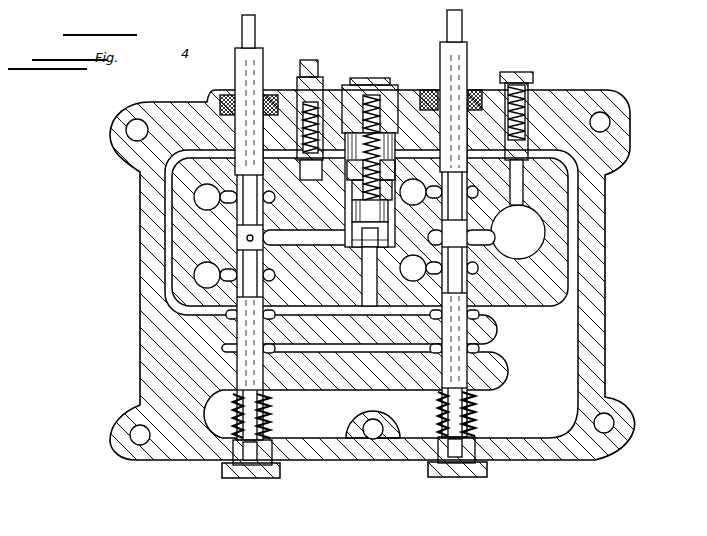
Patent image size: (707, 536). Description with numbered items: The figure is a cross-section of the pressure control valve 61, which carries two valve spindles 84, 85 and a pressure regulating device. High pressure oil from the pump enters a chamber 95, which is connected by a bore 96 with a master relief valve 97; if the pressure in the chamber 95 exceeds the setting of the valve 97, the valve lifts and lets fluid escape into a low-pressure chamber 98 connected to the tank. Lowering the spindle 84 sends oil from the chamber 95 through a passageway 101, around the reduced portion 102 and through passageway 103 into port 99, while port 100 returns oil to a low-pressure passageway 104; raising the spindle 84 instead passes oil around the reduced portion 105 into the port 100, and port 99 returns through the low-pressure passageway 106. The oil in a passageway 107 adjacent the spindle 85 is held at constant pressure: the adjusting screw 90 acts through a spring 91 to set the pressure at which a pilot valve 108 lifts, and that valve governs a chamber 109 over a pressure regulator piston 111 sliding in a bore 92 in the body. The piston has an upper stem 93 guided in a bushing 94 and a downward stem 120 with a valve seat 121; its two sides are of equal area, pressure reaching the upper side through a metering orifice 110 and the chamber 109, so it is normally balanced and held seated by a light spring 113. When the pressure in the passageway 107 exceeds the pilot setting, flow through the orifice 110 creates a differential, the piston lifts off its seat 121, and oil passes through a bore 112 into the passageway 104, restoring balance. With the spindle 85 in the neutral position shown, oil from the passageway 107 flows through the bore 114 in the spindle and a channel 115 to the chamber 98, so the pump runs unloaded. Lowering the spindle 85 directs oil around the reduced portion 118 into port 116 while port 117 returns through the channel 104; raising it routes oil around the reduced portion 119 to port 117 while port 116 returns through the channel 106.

The pressure control valve 61 is at (148, 354).
The valve spindle 84 is at (462, 66).
The valve spindle 85 is at (263, 56).
The pressure adjusting screw 90 is at (310, 62).
The spring 91 is at (318, 88).
The bore 92 is at (383, 238).
The stem 93 is at (352, 180).
The bushing 94 is at (399, 162).
The chamber 95 is at (535, 227).
The bore 96 is at (522, 190).
The master relief valve 97 is at (526, 142).
The low-pressure chamber 98 is at (570, 355).
The port 99 is at (410, 197).
The port 100 is at (417, 280).
The passageway 101 is at (475, 240).
The reduced portion 102 is at (458, 203).
The passageway 103 is at (470, 190).
The passageway 104 is at (410, 316).
The reduced portion 105 is at (470, 287).
The low-pressure passageway 106 is at (245, 152).
The passageway 107 is at (287, 238).
The pilot valve 108 is at (305, 166).
The chamber 109 is at (312, 192).
The metering orifice 110 is at (308, 212).
The pressure regulator piston 111 is at (353, 230).
The bore 112 is at (372, 285).
The spring 113 is at (384, 142).
The bore 114 is at (264, 332).
The channel 115 is at (333, 352).
The port 116 is at (215, 190).
The port 117 is at (207, 265).
The reduced portion 118 is at (243, 212).
The reduced portion 119 is at (262, 290).
The stem 120 is at (380, 245).
The valve seat 121 is at (360, 250).